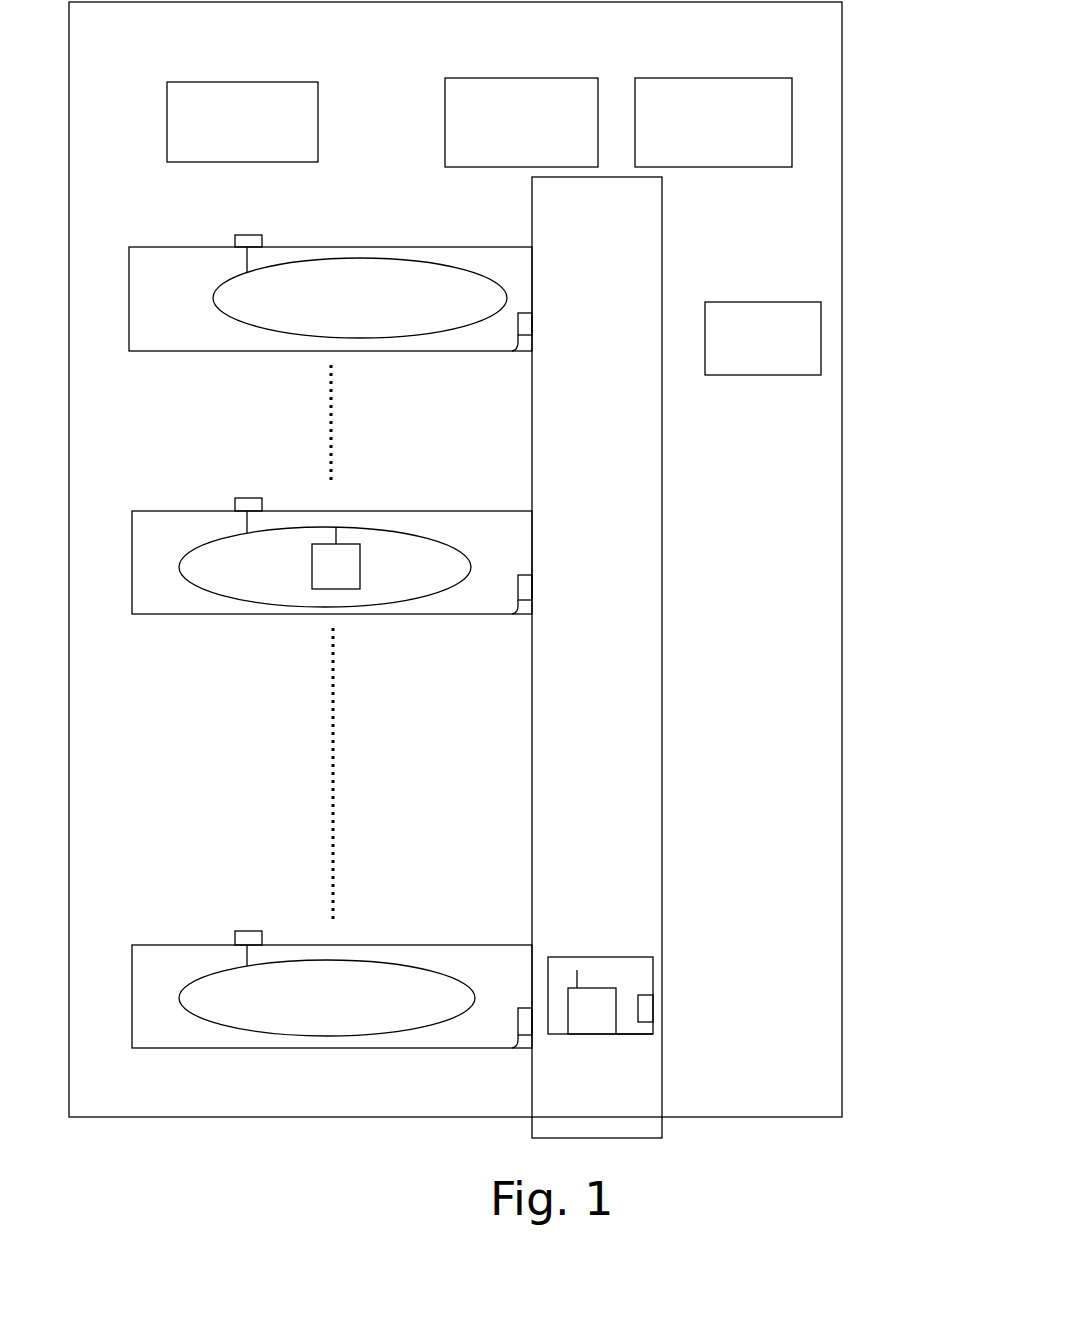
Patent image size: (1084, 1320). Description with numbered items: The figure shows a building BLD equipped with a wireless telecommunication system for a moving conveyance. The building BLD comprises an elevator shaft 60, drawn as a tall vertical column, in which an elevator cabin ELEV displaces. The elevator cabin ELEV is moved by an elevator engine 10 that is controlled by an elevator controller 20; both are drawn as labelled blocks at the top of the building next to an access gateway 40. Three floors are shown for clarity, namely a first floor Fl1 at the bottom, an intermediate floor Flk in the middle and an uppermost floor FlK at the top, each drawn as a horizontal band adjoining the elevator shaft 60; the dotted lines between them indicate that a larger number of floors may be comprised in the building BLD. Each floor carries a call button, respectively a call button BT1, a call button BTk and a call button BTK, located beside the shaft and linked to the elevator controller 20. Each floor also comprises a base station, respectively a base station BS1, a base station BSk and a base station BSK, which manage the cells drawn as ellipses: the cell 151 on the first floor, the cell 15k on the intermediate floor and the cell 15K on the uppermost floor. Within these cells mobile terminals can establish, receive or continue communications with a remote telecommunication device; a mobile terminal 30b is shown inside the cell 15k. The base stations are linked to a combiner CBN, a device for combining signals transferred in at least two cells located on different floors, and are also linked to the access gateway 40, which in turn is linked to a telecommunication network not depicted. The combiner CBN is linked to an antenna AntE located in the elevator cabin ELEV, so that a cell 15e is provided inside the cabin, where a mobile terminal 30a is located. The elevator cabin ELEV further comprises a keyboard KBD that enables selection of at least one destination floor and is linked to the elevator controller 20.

The elevator engine 10 is at (445, 103).
The elevator controller 20 is at (788, 153).
The access gateway 40 is at (318, 138).
The elevator shaft 60 is at (664, 848).
The building BLD is at (855, 637).
The combiner CBN is at (763, 338).
The floor K FlK is at (365, 247).
The floor k Flk is at (365, 511).
The floor 1 Fl1 is at (365, 945).
The cell of floor K 15K is at (227, 280).
The cell of floor k 15k is at (227, 540).
The cell of floor 1 151 is at (220, 972).
The cell in the elevator cabin 15e is at (648, 1027).
The base station of floor K BSK is at (262, 240).
The base station of floor k BSk is at (263, 498).
The base station of floor 1 BS1 is at (263, 931).
The call button of floor K BTK is at (513, 351).
The call button of floor k BTk is at (513, 614).
The call button of floor 1 BT1 is at (513, 1048).
The mobile terminal 30a is at (592, 1011).
The mobile terminal 30b is at (336, 558).
The elevator cabin ELEV is at (585, 1034).
The antenna AntE is at (603, 974).
The keyboard KBD is at (650, 1021).